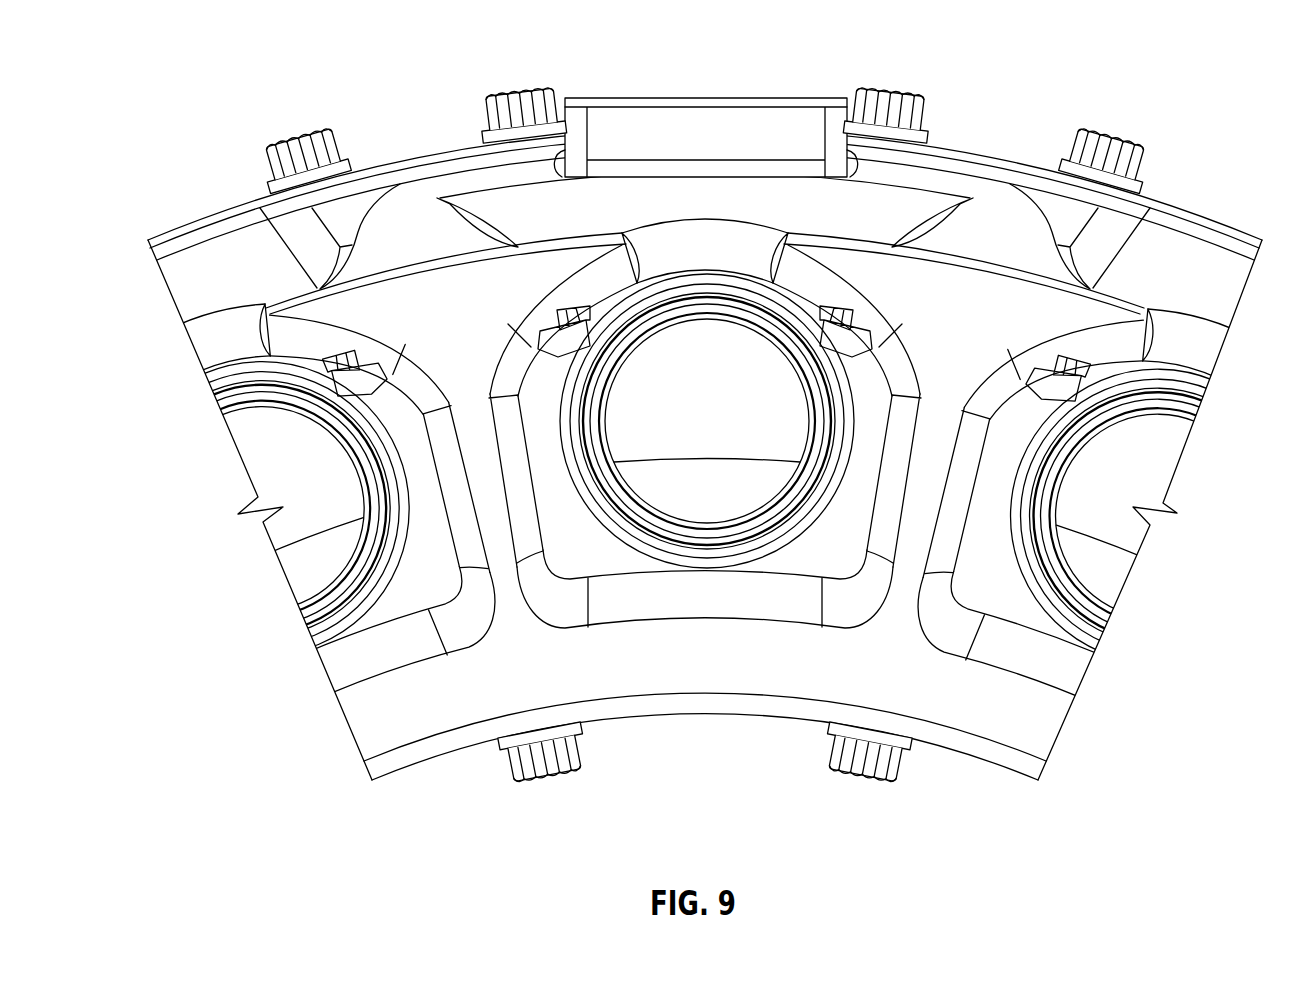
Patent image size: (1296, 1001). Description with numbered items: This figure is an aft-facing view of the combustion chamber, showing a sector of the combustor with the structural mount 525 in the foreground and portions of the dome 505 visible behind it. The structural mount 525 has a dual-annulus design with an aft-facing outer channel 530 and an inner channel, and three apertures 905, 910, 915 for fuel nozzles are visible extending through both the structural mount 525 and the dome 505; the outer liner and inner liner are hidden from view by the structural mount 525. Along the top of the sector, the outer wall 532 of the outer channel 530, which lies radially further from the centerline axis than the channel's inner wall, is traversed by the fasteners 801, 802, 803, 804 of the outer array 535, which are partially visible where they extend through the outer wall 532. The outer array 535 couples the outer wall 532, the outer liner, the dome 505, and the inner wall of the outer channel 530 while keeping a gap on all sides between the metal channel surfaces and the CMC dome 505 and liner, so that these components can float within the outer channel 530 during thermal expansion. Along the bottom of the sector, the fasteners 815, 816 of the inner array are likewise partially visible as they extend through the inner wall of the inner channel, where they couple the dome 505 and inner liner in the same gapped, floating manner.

The dome 505 is at (210, 386).
The structural mount 525 is at (728, 667).
The outer channel 530 is at (193, 293).
The outer wall 532 is at (400, 163).
The outer array of fasteners 535 is at (377, 723).
The fastener 801 is at (283, 140).
The fastener 802 is at (507, 92).
The fastener 803 is at (863, 88).
The fastener 804 is at (1093, 130).
The fastener 815 is at (523, 767).
The fastener 816 is at (893, 767).
The aperture 905 is at (322, 489).
The aperture 910 is at (728, 427).
The aperture 915 is at (1134, 489).